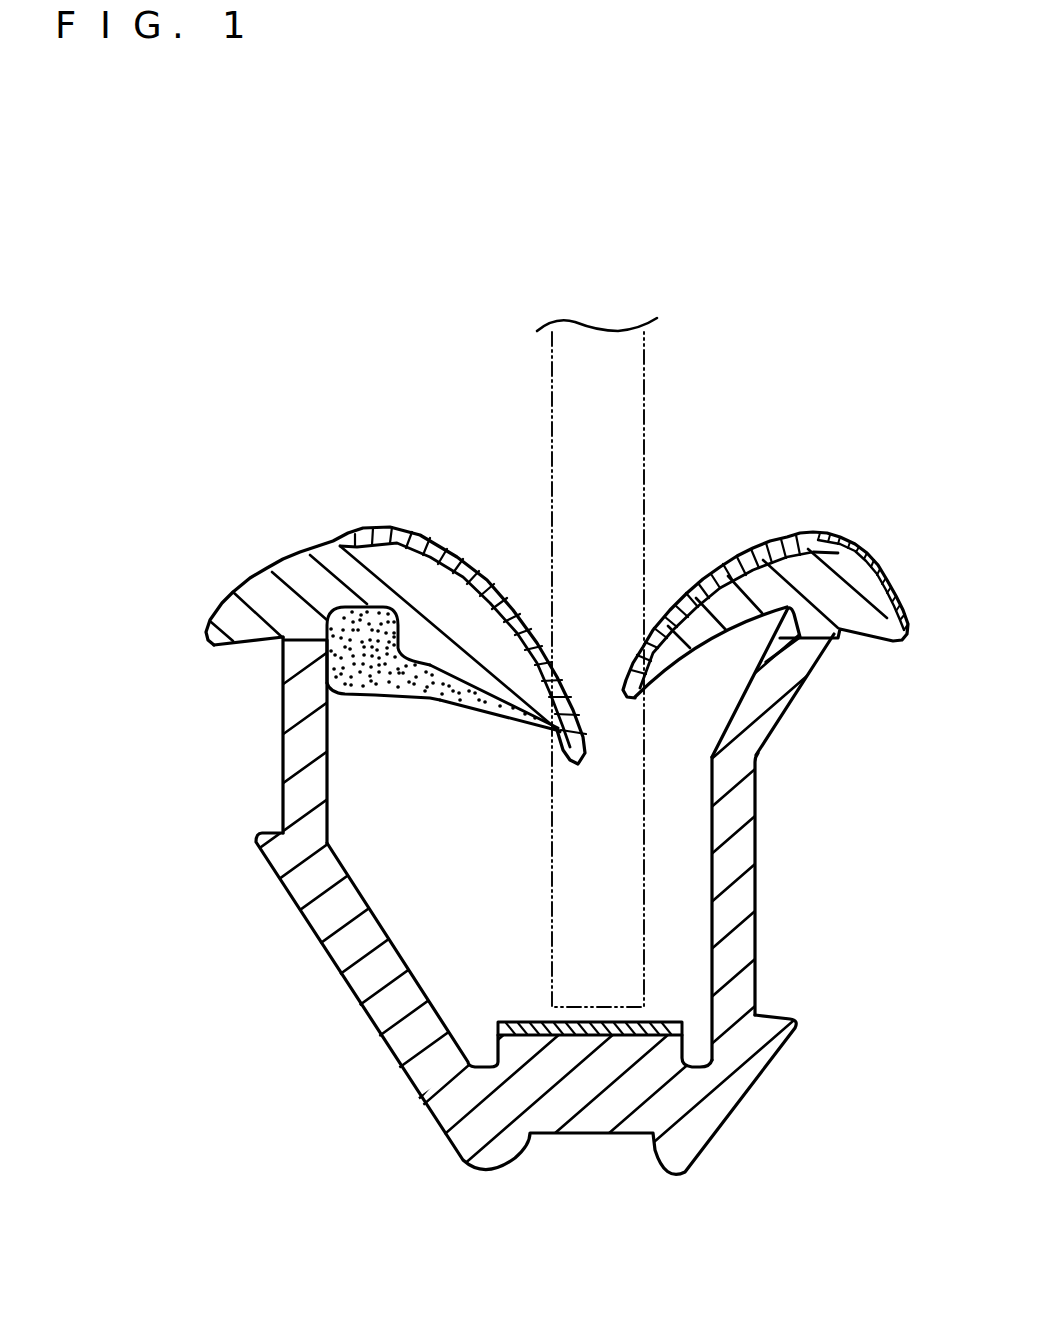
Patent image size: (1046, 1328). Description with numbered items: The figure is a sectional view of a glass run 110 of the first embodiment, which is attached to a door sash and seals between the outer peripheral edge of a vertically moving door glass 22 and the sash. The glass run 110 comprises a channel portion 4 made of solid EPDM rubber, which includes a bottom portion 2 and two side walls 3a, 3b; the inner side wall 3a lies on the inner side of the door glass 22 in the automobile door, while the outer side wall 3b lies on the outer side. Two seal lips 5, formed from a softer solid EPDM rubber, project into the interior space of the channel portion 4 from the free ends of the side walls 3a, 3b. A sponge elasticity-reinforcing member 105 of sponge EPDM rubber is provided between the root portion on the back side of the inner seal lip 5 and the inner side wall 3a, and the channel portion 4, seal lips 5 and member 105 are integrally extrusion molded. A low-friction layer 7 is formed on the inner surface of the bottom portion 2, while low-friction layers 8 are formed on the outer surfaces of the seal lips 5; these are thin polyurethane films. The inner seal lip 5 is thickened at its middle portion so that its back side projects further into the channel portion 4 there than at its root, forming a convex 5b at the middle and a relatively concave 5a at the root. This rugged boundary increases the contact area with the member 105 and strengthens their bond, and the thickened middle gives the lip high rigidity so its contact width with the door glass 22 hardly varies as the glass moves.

The glass run 110 is at (516, 884).
The door glass 22 is at (644, 383).
The bottom portion 2 is at (602, 1117).
The inner side wall 3a is at (303, 772).
The outer side wall 3b is at (747, 943).
The channel portion 4 is at (738, 807).
The seal lip 5 is at (357, 561).
The concave 5a is at (354, 612).
The convex 5b is at (425, 666).
The low-friction layer 7 is at (518, 1027).
The low-friction layers 8 is at (416, 543).
The sponge elasticity-reinforcing member 105 is at (342, 694).